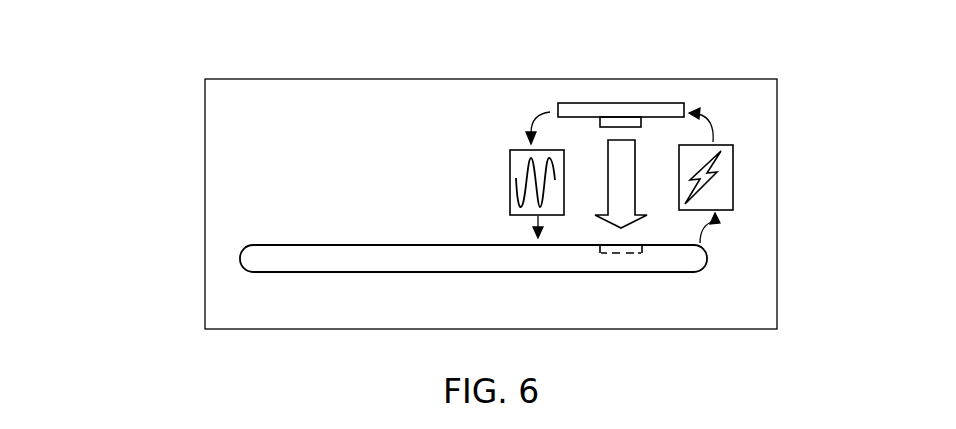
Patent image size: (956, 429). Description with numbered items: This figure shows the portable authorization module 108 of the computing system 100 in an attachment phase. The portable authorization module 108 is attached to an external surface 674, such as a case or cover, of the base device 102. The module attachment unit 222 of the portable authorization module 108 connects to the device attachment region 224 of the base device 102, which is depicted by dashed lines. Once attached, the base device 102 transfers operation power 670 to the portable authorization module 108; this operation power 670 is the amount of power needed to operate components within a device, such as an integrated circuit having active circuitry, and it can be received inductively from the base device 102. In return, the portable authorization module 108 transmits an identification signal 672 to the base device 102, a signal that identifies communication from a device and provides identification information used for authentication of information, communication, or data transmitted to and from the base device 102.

The computing system 100 is at (216, 46).
The base device 102 is at (258, 255).
The portable authorization module 108 is at (660, 112).
The module attachment unit 222 is at (623, 117).
The device attachment region 224 is at (625, 255).
The operation power 670 is at (733, 180).
The identification signal 672 is at (502, 168).
The external surface 674 is at (385, 272).